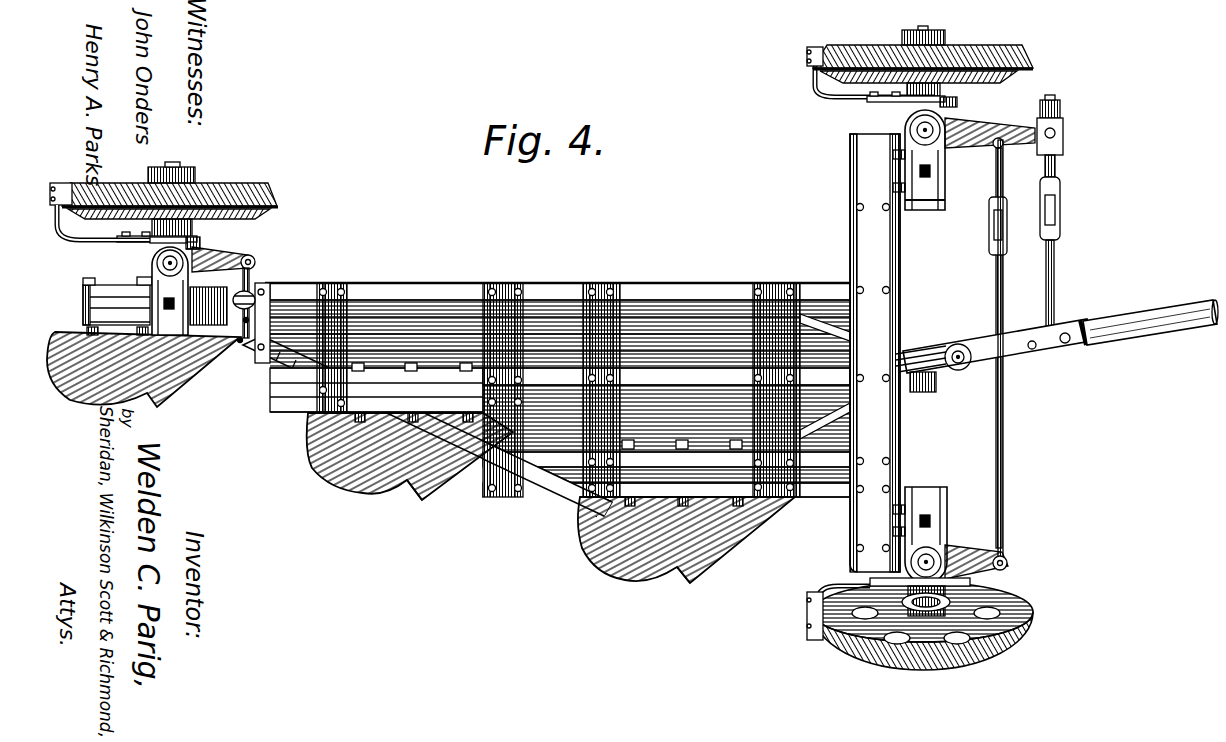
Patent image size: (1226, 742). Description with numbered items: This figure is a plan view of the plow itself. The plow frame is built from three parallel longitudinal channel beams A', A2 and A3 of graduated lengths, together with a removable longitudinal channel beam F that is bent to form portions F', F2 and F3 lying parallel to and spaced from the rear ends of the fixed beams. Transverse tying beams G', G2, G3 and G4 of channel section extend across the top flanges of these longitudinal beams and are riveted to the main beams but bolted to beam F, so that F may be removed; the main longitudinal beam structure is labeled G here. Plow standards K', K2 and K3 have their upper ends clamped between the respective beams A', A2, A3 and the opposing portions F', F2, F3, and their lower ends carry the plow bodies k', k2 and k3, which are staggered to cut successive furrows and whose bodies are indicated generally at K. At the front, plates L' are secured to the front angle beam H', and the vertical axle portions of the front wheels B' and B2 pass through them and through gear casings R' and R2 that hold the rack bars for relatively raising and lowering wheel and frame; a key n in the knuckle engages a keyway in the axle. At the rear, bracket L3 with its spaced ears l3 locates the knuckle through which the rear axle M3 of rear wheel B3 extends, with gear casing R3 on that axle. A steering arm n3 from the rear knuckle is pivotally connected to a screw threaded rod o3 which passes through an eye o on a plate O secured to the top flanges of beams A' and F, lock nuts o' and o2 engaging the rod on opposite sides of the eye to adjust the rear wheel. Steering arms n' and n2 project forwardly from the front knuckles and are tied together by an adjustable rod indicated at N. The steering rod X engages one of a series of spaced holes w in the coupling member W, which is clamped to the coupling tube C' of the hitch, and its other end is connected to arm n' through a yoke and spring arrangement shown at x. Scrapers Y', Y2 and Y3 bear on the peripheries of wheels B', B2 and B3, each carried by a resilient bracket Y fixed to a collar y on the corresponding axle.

The scraper Y3 is at (66, 190).
The rear wheel B3 is at (250, 185).
The laterally projecting spaced ears l3 is at (196, 252).
The steering arm n3 is at (228, 258).
The screw threaded rod o3 is at (250, 286).
The lock nut o' is at (267, 281).
The bracket L3 is at (140, 276).
The rear axle M3 is at (155, 259).
The plow standard K' is at (103, 306).
The longitudinal portion of removable beam F' is at (101, 313).
The plate L' is at (123, 313).
The gear casing R3 is at (189, 286).
The eye o is at (251, 329).
The lock nut o2 is at (237, 345).
The plate O is at (250, 350).
The plow body k' is at (143, 375).
The tying beam G' is at (333, 331).
The frame beam G is at (557, 383).
The tying beam G2 is at (500, 283).
The tying beam G3 is at (600, 283).
The longitudinal channel beam A' is at (702, 271).
The tying beam G4 is at (773, 283).
The plow standard K2 is at (395, 394).
The longitudinal portion of removable beam F2 is at (405, 407).
The plow moldboard K is at (551, 498).
The plow body k2 is at (366, 488).
The removable longitudinal channel beam F is at (427, 426).
The longitudinal channel beam A2 is at (685, 379).
The longitudinal channel beam A3 is at (655, 464).
The plow standard K3 is at (660, 480).
The longitudinal portion of removable beam F3 is at (672, 493).
The plow body k3 is at (649, 573).
The scraper Y' is at (818, 40).
The front wheel B' is at (923, 52).
The resilient bracket Y is at (496, 340).
The collar y is at (905, 106).
The steering arm n' is at (990, 120).
The gear casing R' is at (919, 173).
The front angle beam H' is at (853, 353).
The key n is at (980, 348).
The turnbuckle x is at (1061, 214).
The steering rod X is at (1054, 289).
The coupling tube C' is at (1150, 312).
The coupling member W is at (1018, 358).
The spaced holes w is at (1067, 346).
The gear casing R2 is at (918, 493).
The rod N is at (1001, 459).
The steering arm n2 is at (958, 554).
The scraper Y2 is at (816, 643).
The front wheel B2 is at (980, 658).